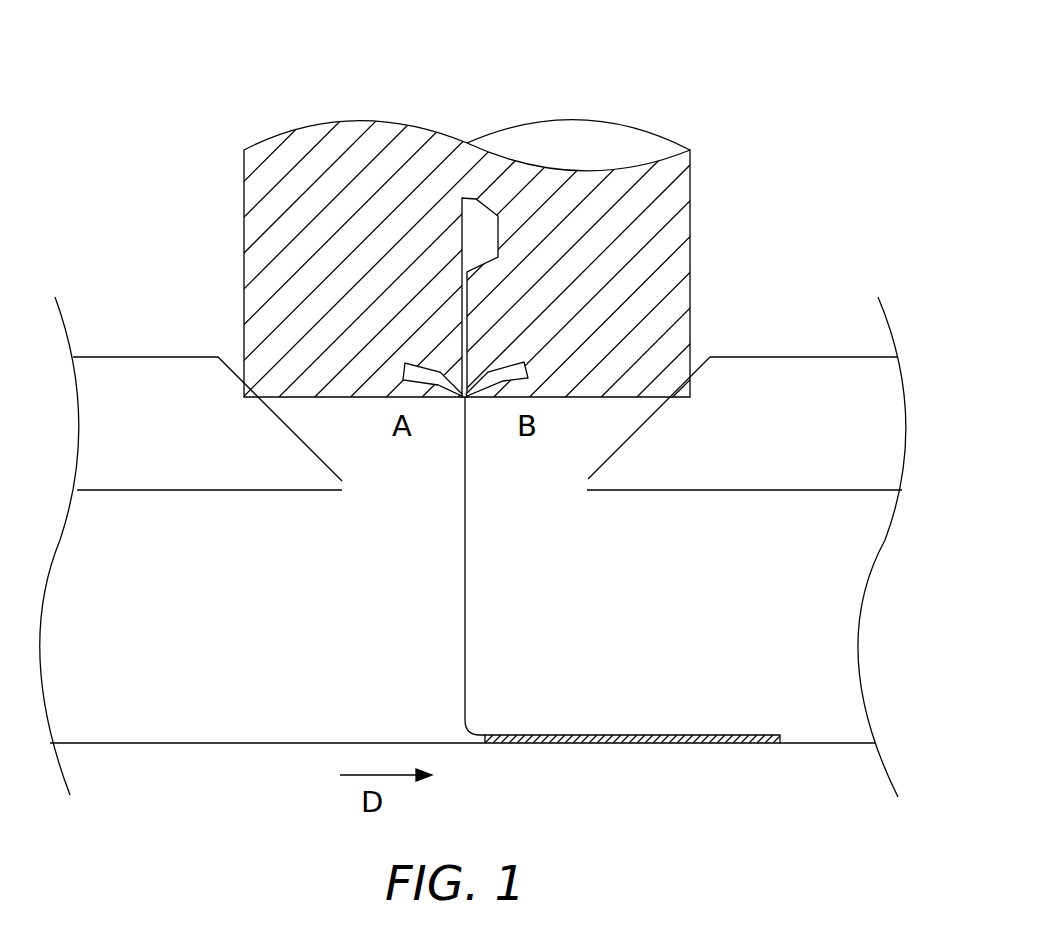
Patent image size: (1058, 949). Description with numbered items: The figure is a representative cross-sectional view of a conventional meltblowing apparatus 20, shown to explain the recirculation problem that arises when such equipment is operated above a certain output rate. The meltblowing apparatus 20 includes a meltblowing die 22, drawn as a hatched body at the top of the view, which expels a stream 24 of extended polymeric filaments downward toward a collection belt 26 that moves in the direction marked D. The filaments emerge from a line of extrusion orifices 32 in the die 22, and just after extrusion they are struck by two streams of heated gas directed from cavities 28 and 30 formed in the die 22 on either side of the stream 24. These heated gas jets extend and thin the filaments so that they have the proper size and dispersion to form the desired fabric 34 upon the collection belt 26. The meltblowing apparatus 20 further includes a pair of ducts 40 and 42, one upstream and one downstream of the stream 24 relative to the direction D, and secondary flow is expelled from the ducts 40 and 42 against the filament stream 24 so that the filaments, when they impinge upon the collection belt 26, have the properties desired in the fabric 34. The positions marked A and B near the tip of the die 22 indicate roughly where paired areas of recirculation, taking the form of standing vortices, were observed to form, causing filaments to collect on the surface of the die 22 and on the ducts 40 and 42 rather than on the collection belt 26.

The meltblowing apparatus 20 is at (633, 72).
The meltblowing die 22 is at (692, 213).
The stream 24 is at (466, 592).
The collection belt 26 is at (277, 743).
The cavity 28 is at (428, 372).
The cavity 30 is at (513, 365).
The extrusion orifices 32 is at (462, 322).
The fabric 34 is at (660, 735).
The duct 40 is at (145, 490).
The duct 42 is at (757, 490).